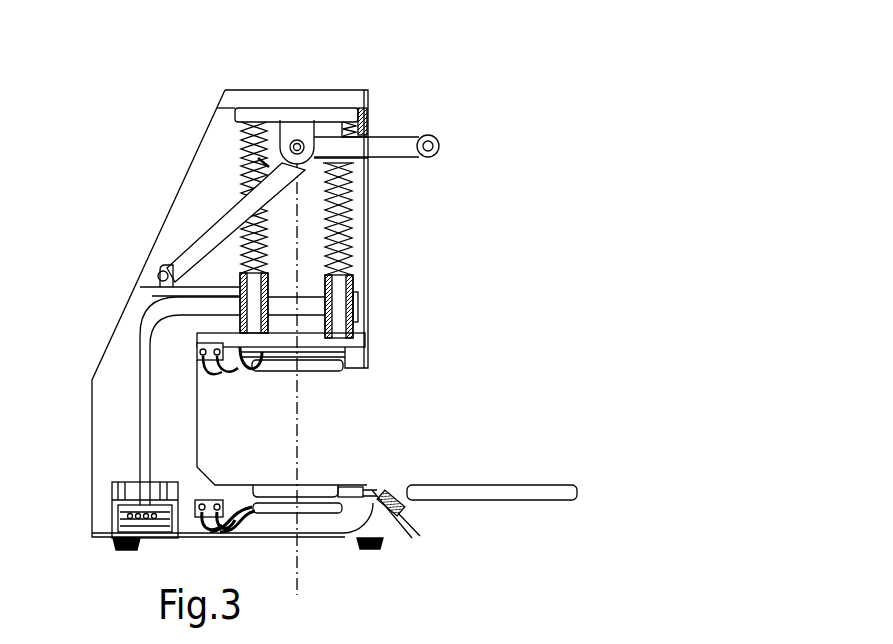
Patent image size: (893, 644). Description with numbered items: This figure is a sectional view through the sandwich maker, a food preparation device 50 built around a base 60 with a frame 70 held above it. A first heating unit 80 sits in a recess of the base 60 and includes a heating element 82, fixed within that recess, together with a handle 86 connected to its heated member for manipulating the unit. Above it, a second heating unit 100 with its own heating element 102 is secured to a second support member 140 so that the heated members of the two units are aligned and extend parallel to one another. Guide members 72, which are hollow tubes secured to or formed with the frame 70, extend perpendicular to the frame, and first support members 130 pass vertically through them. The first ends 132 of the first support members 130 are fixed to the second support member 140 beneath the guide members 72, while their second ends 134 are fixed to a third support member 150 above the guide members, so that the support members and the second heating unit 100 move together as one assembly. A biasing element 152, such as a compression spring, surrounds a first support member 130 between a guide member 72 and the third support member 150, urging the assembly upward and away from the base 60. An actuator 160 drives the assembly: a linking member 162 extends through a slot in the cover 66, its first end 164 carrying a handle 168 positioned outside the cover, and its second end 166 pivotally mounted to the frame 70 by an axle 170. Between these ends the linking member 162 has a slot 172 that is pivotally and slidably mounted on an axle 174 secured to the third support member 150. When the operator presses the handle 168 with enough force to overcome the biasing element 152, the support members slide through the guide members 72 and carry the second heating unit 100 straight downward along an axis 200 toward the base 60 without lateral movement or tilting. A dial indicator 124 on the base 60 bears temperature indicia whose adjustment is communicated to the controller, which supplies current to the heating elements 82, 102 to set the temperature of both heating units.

The food preparation device 50 is at (107, 115).
The base 60 is at (392, 527).
The cover 66 is at (367, 97).
The frame 70 is at (300, 303).
The guide members 72 is at (350, 318).
The first heating unit 80 is at (290, 482).
The heating element 82 is at (315, 510).
The handle 86 is at (497, 495).
The second heating unit 100 is at (315, 375).
The heating element 102 is at (140, 288).
The dial indicator 124 is at (403, 512).
The first support members 130 is at (397, 219).
The first ends 132 is at (340, 332).
The second ends 134 is at (362, 112).
The second support member 140 is at (318, 338).
The third support member 150 is at (317, 115).
The biasing element 152 is at (350, 237).
The actuator 160 is at (430, 143).
The linking member 162 is at (243, 198).
The first end 164 is at (397, 153).
The second end 166 is at (177, 263).
The handle 168 is at (447, 147).
The axle 170 is at (157, 272).
The slot 172 is at (247, 147).
The axle 174 is at (298, 145).
The axis 200 is at (298, 573).